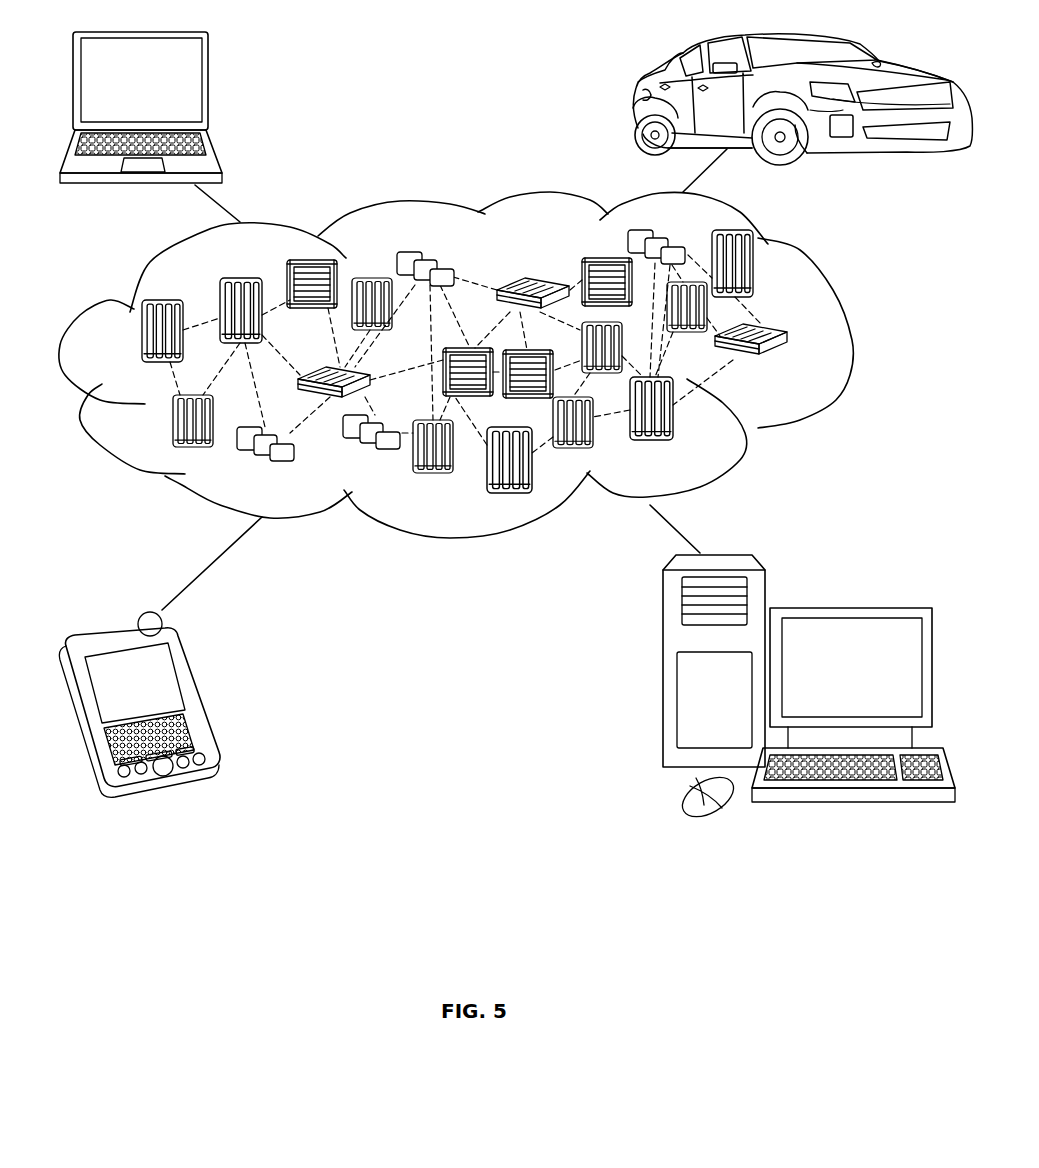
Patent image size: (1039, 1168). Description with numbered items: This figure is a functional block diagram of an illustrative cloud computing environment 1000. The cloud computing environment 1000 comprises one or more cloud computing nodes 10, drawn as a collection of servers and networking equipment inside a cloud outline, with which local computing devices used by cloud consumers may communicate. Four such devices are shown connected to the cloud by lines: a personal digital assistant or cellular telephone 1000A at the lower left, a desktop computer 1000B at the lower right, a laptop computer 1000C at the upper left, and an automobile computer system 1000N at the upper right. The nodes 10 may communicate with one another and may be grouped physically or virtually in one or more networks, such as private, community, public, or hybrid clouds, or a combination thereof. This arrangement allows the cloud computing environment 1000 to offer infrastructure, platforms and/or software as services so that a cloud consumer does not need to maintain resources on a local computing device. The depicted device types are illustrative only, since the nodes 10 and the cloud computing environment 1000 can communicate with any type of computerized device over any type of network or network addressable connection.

The laptop computer 1000C is at (209, 88).
The automobile computer system 1000N is at (638, 104).
The cloud computing environment 1000 is at (850, 340).
The cloud computing nodes 10 is at (800, 379).
The personal digital assistant (PDA) or cellular telephone 1000A is at (203, 693).
The desktop computer 1000B is at (848, 608).